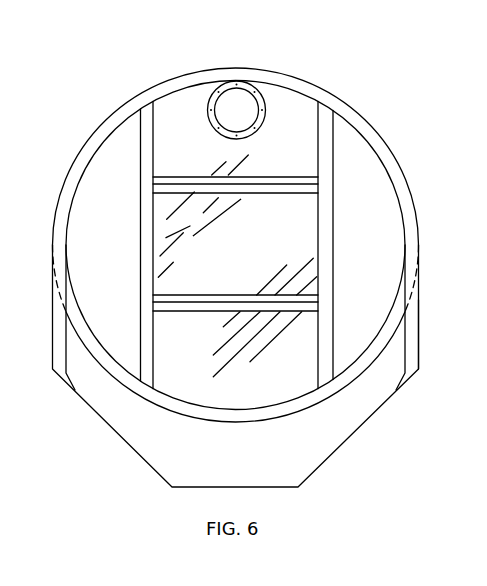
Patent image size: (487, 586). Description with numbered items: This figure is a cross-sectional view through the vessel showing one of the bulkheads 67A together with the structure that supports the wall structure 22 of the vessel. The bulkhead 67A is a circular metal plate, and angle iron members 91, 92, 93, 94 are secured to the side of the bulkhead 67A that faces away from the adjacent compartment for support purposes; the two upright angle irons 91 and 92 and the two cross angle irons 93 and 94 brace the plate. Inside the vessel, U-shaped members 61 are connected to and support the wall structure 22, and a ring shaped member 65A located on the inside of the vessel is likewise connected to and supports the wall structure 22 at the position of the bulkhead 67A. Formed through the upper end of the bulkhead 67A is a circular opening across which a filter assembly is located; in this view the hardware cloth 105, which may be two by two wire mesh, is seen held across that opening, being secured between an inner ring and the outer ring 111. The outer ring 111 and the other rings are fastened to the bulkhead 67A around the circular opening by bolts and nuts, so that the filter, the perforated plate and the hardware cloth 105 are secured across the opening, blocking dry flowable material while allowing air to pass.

The wall structure 22 is at (137, 97).
The U-shaped members 61 is at (412, 328).
The ring shaped member 65A is at (305, 402).
The bulkhead 67A is at (373, 200).
The angle iron member 91 is at (140, 150).
The angle iron member 92 is at (333, 135).
The angle iron member 93 is at (288, 177).
The angle iron member 94 is at (207, 312).
The hardware cloth 105 is at (229, 98).
The outer ring 111 is at (237, 82).